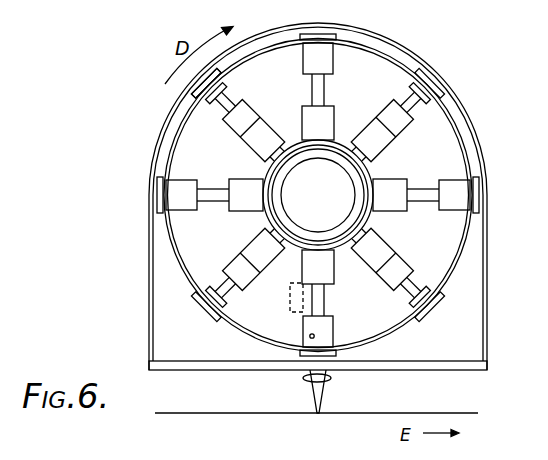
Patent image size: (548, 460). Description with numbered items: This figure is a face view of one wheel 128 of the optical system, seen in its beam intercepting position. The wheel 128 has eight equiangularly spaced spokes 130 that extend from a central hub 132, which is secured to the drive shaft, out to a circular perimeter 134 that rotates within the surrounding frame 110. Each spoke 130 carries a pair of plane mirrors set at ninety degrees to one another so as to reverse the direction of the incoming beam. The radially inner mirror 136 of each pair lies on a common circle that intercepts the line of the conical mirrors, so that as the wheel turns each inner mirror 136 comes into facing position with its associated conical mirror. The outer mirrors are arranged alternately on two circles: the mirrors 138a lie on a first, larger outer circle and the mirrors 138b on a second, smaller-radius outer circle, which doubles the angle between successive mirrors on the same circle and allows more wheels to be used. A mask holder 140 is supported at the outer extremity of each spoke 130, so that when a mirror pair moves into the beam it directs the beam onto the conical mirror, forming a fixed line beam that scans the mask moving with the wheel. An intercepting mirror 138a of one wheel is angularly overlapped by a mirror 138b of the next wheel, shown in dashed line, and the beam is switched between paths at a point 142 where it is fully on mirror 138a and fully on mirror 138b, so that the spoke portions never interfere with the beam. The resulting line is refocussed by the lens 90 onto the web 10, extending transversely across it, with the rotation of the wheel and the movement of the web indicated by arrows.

The web 10 is at (186, 414).
The lens 90 is at (333, 380).
The frame 110 is at (149, 298).
The wheel 128 is at (383, 23).
The spoke 130 is at (193, 93).
The hub 132 is at (268, 170).
The circular perimeter 134 is at (412, 58).
The radially inner mirror 136 is at (388, 178).
The outer mirror on first outer circle 138a is at (455, 201).
The outer mirror on second outer circle 138b is at (394, 117).
The mask holder 140 is at (309, 364).
The beam switching point 142 is at (309, 340).